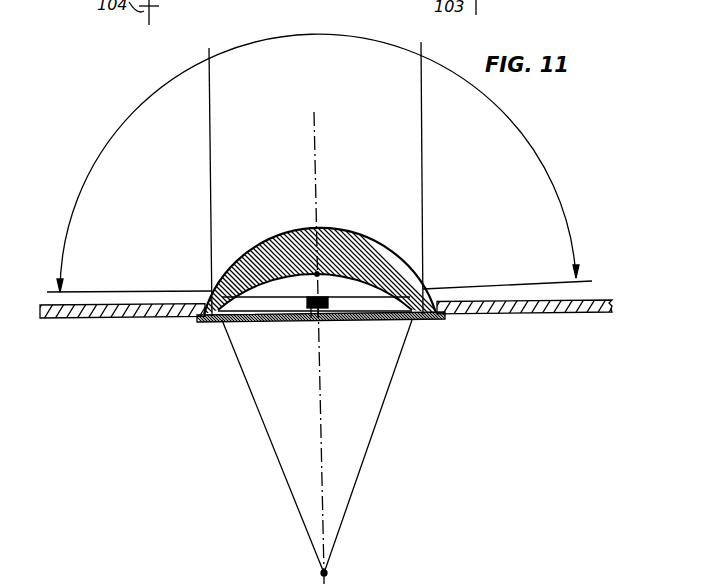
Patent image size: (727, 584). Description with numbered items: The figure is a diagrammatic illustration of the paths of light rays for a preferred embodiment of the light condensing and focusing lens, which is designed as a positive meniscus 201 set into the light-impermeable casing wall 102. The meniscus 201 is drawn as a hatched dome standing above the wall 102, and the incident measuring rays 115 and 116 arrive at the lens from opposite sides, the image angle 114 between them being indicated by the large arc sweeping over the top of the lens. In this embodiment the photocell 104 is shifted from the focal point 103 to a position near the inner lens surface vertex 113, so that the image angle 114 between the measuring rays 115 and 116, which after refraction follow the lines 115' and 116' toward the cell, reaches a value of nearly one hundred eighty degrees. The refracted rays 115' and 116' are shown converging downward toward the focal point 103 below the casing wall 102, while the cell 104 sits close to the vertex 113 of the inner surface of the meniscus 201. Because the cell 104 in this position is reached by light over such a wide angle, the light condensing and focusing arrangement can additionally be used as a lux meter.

The light-impermeable casing wall 102 is at (510, 309).
The focal point 103 is at (322, 574).
The photocell 104 is at (310, 322).
The inner lens surface vertex 113 is at (318, 275).
The image angle 114 is at (316, 33).
The measuring ray 115 is at (129, 279).
The measuring ray 116 is at (507, 271).
The refracted measuring ray 115' is at (273, 446).
The refracted measuring ray 116' is at (368, 446).
The positive meniscus 201 is at (350, 233).